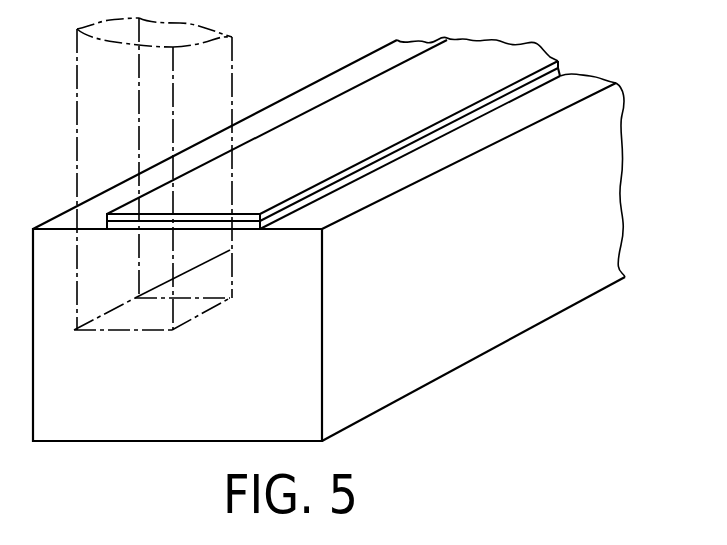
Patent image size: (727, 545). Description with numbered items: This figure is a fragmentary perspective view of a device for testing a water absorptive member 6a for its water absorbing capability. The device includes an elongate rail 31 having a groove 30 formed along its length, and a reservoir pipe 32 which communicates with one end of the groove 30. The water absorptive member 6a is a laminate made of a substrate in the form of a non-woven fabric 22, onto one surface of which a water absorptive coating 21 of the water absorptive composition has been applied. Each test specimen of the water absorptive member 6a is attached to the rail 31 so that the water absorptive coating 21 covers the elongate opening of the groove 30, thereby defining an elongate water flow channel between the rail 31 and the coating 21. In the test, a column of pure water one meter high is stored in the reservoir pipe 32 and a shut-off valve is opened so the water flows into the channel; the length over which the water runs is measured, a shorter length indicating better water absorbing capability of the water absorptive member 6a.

The rail 31 is at (509, 322).
The water absorptive member 6a is at (333, 198).
The water absorptive coating 21 is at (256, 232).
The non-woven fabric 22 is at (238, 222).
The groove 30 is at (230, 280).
The reservoir pipe 32 is at (222, 88).